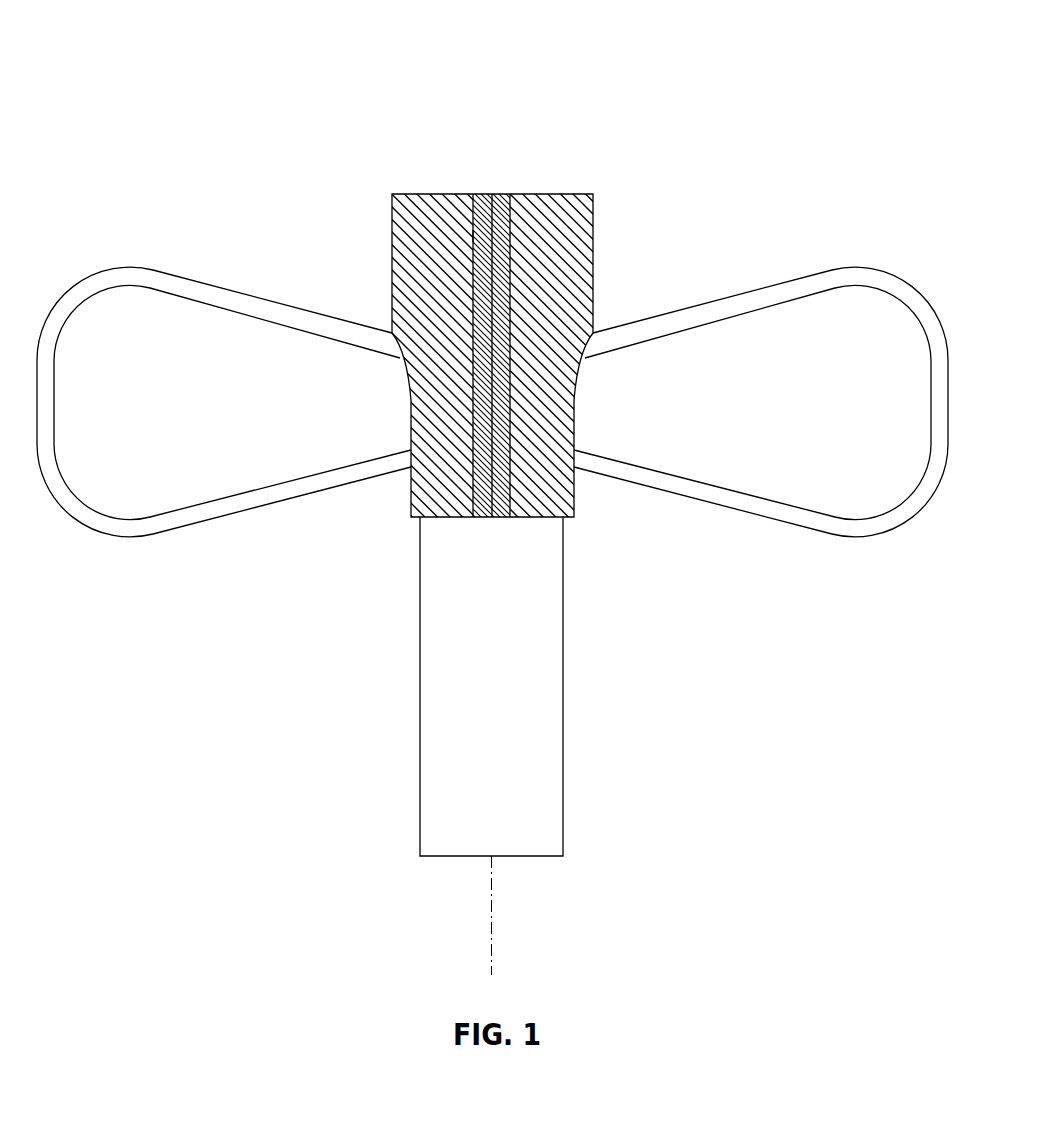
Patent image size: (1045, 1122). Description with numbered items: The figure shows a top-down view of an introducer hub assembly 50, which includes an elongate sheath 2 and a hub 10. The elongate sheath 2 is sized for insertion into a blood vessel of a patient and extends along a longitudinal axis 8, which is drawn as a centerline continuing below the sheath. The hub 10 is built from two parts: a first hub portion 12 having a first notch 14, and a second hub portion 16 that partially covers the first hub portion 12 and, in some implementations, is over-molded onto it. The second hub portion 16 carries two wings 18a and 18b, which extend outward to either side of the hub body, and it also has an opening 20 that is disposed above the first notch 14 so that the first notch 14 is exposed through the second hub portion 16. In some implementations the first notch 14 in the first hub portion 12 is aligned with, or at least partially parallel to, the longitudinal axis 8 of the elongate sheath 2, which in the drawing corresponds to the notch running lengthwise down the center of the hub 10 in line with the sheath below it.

The introducer hub assembly 50 is at (199, 66).
The hub 10 is at (605, 262).
The second hub portion 16 is at (420, 200).
The first notch 14 is at (496, 205).
The first hub portion 12 is at (503, 217).
The opening 20 is at (473, 236).
The wing 18a is at (93, 305).
The wing 18b is at (877, 305).
The elongate sheath 2 is at (565, 742).
The longitudinal axis 8 is at (492, 940).